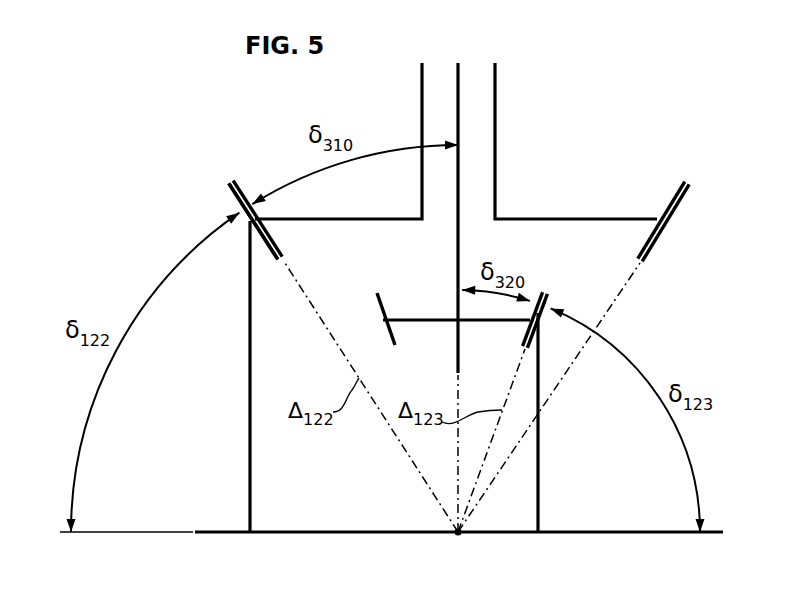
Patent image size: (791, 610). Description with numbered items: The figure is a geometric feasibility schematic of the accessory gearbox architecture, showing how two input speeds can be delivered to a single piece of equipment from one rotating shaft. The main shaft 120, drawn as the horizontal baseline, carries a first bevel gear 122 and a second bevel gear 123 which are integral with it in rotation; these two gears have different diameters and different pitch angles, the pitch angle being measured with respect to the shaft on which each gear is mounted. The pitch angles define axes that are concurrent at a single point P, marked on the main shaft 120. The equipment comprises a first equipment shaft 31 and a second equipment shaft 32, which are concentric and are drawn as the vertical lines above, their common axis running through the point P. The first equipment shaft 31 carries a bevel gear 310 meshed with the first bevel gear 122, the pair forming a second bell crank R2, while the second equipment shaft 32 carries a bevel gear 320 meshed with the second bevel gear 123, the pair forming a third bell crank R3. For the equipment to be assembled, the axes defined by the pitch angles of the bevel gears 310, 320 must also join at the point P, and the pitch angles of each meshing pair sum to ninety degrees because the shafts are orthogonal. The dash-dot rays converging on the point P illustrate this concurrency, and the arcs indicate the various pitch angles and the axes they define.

The first equipment shaft 31 is at (495, 137).
The second equipment shaft 32 is at (457, 240).
The bevel gear 310 is at (235, 200).
The bevel gear 320 is at (378, 295).
The second bell crank R2 is at (212, 218).
The third bell crank R3 is at (562, 295).
The first bevel gear 122 is at (252, 452).
The second bevel gear 123 is at (538, 465).
The main shaft 120 is at (641, 531).
The point P is at (455, 540).